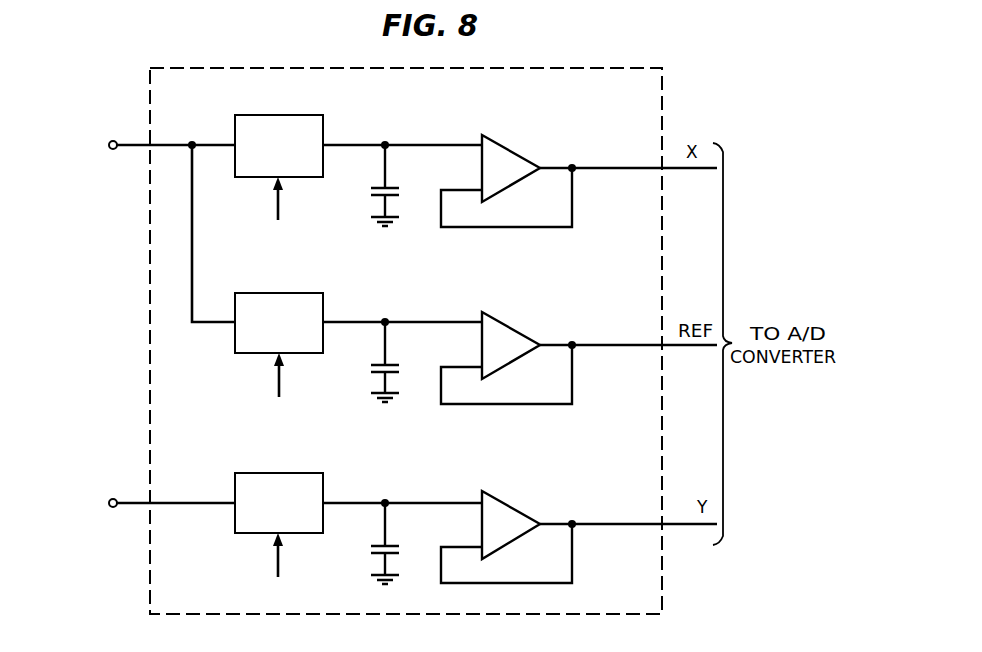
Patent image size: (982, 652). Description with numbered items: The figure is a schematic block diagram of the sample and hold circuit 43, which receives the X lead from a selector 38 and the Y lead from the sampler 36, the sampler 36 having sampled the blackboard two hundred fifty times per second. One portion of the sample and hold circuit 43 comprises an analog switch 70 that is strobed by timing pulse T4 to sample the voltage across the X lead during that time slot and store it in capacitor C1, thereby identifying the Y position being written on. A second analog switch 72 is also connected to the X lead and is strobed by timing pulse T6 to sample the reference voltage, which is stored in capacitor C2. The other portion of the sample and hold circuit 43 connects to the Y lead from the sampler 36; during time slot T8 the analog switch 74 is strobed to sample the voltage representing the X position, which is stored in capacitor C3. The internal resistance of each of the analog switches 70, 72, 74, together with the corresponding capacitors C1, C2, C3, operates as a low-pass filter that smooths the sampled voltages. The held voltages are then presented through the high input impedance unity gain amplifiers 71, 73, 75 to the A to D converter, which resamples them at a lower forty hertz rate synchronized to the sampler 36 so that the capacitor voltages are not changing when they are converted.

The sample and hold circuit 43 is at (208, 66).
The selector 38 is at (76, 126).
The sampler 36 is at (76, 486).
The analog switch 70 is at (274, 114).
The second analog switch 72 is at (277, 292).
The analog switch 74 is at (277, 472).
The unity gain amplifier 71 is at (519, 134).
The unity gain amplifier 73 is at (519, 311).
The unity gain amplifier 75 is at (521, 489).
The capacitor C1 is at (373, 185).
The capacitor C2 is at (372, 362).
The capacitor C3 is at (372, 543).